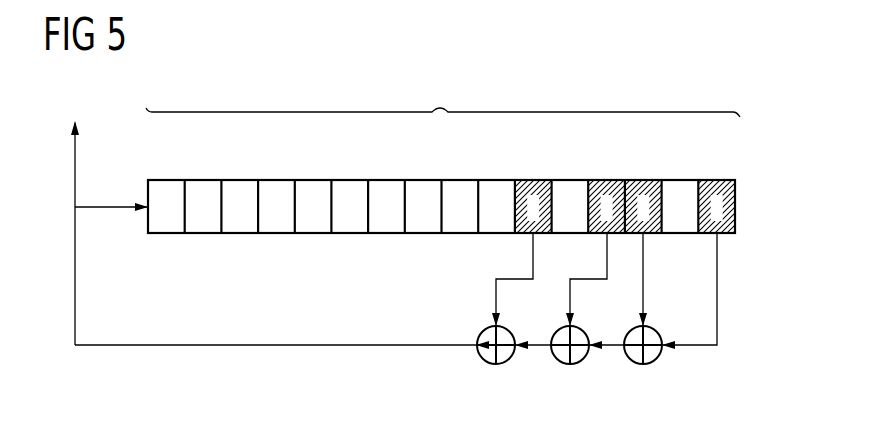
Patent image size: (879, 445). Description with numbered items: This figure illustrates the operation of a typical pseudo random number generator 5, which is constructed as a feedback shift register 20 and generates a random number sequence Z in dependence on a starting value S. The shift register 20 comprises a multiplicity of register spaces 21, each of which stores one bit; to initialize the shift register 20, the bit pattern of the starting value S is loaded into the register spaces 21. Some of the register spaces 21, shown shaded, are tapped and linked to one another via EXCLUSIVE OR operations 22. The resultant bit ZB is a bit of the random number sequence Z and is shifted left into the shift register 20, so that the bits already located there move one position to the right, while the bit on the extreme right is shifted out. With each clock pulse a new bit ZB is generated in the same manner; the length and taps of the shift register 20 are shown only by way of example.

The random number generator 5 is at (723, 90).
The shift register 20 is at (737, 205).
The register spaces 21 is at (457, 180).
The EXCLUSIVE OR operations 22 is at (496, 364).